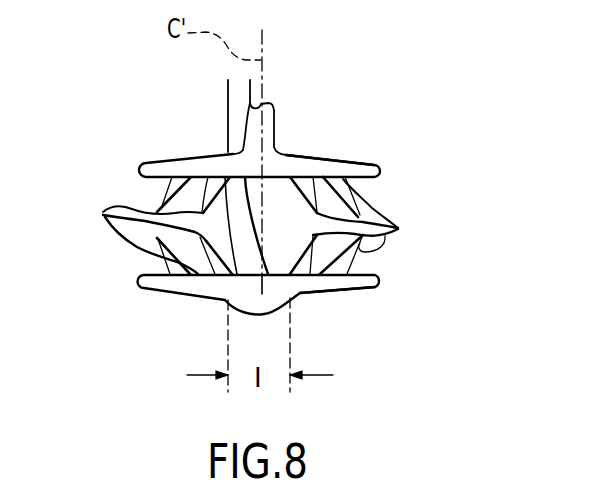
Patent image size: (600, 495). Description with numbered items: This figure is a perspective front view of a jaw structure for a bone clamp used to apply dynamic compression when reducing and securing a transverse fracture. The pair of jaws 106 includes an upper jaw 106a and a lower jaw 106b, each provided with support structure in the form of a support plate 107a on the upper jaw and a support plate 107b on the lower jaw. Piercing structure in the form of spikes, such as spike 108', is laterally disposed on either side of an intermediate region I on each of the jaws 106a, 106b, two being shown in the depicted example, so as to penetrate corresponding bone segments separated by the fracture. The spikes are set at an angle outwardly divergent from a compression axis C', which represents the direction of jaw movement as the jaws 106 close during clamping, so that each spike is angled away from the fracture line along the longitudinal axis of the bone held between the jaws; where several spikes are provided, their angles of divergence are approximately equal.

The pair of jaws 106 is at (375, 75).
The upper jaw 106a is at (178, 159).
The lower jaw 106b is at (152, 289).
The support plate 107a is at (357, 163).
The support plate 107b is at (339, 286).
The spike 108' is at (146, 225).